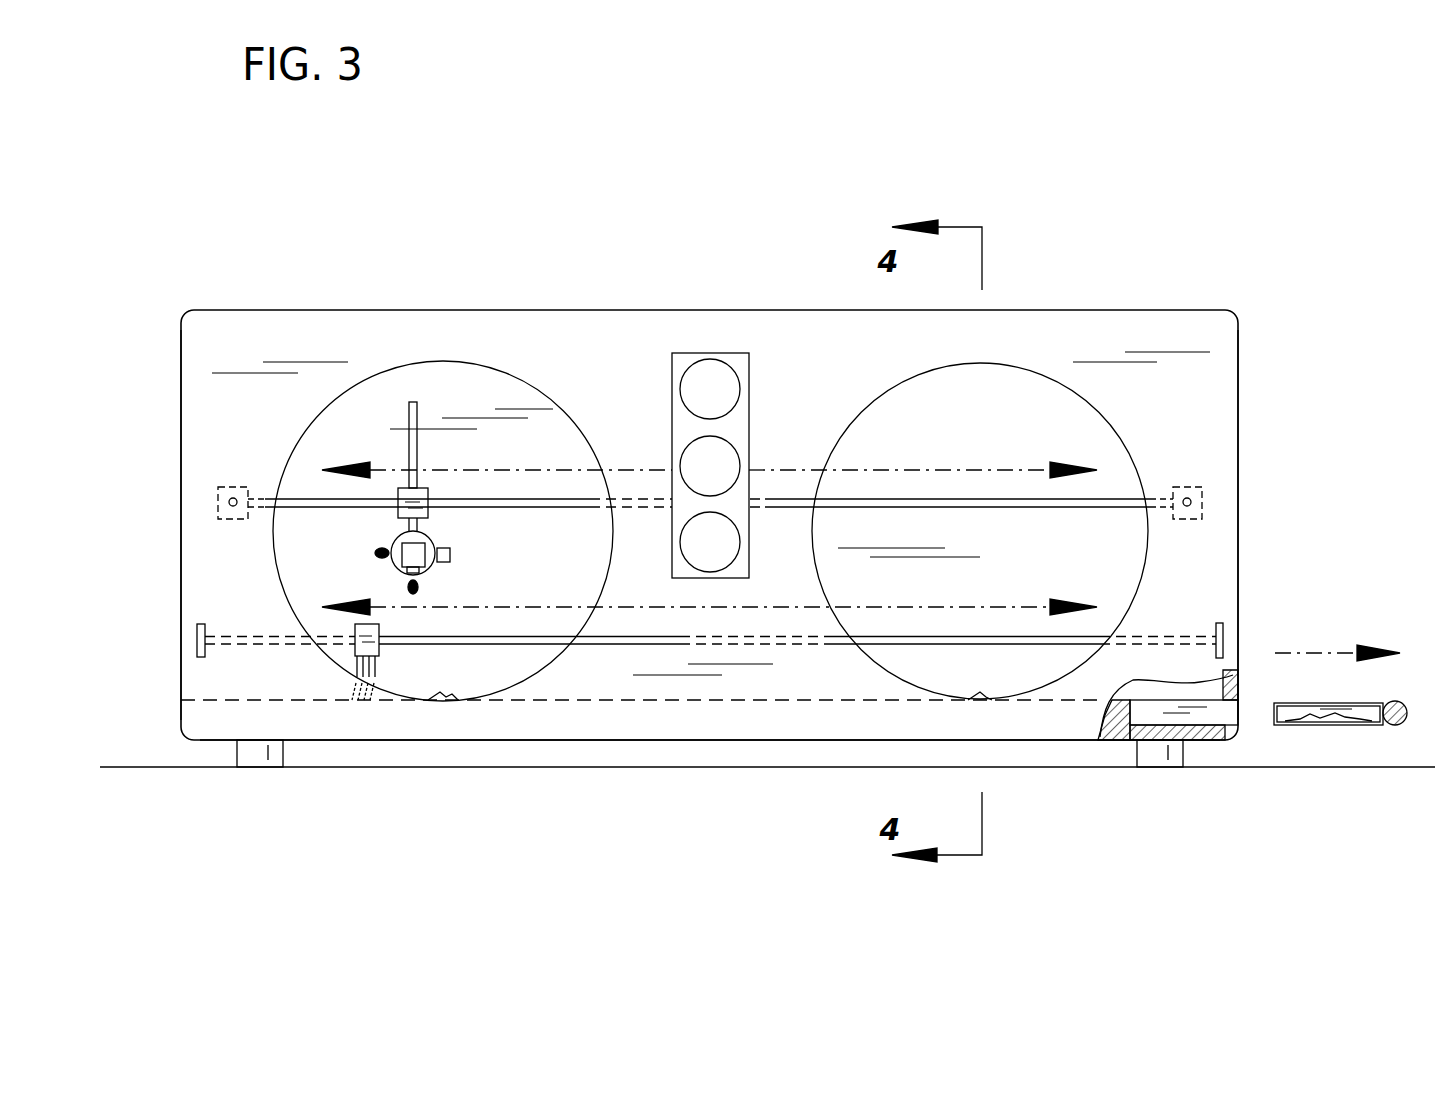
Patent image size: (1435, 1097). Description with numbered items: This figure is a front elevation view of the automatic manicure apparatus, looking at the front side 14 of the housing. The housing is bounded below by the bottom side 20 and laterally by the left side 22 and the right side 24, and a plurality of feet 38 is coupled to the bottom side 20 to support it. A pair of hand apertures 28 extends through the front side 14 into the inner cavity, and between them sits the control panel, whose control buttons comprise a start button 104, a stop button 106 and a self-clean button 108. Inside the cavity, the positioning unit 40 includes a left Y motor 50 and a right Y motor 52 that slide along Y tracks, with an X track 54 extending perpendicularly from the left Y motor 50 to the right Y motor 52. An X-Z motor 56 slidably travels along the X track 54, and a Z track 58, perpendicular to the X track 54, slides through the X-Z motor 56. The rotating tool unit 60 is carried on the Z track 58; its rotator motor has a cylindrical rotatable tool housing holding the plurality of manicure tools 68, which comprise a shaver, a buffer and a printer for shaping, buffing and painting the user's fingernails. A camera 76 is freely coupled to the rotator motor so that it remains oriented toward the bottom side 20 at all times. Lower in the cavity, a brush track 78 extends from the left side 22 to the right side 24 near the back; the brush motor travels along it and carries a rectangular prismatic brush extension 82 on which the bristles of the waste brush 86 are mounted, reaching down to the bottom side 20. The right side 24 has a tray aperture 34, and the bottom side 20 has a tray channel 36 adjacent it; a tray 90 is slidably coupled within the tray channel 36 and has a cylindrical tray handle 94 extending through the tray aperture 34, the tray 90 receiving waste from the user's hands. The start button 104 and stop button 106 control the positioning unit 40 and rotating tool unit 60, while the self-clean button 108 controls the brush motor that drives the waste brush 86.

The front side 14 is at (1150, 322).
The bottom side 20 is at (755, 740).
The left side 22 is at (181, 557).
The right side 24 is at (1240, 500).
The hand apertures 28 is at (903, 422).
The tray aperture 34 is at (1242, 707).
The tray channel 36 is at (1202, 717).
The feet 38 is at (257, 757).
The positioning unit 40 is at (410, 488).
The left Y motor 50 is at (236, 487).
The right Y motor 52 is at (1189, 490).
The X track 54 is at (1000, 500).
The X-Z motor 56 is at (427, 490).
The Z track 58 is at (415, 422).
The rotating tool unit 60 is at (432, 543).
The manicure tools 68 is at (442, 567).
The camera 76 is at (391, 548).
The brush track 78 is at (1012, 640).
The brush extension 82 is at (360, 656).
The waste brush 86 is at (384, 558).
The tray 90 is at (1337, 725).
The tray handle 94 is at (1397, 725).
The start button 104 is at (690, 365).
The stop button 106 is at (735, 520).
The self-clean button 108 is at (745, 435).